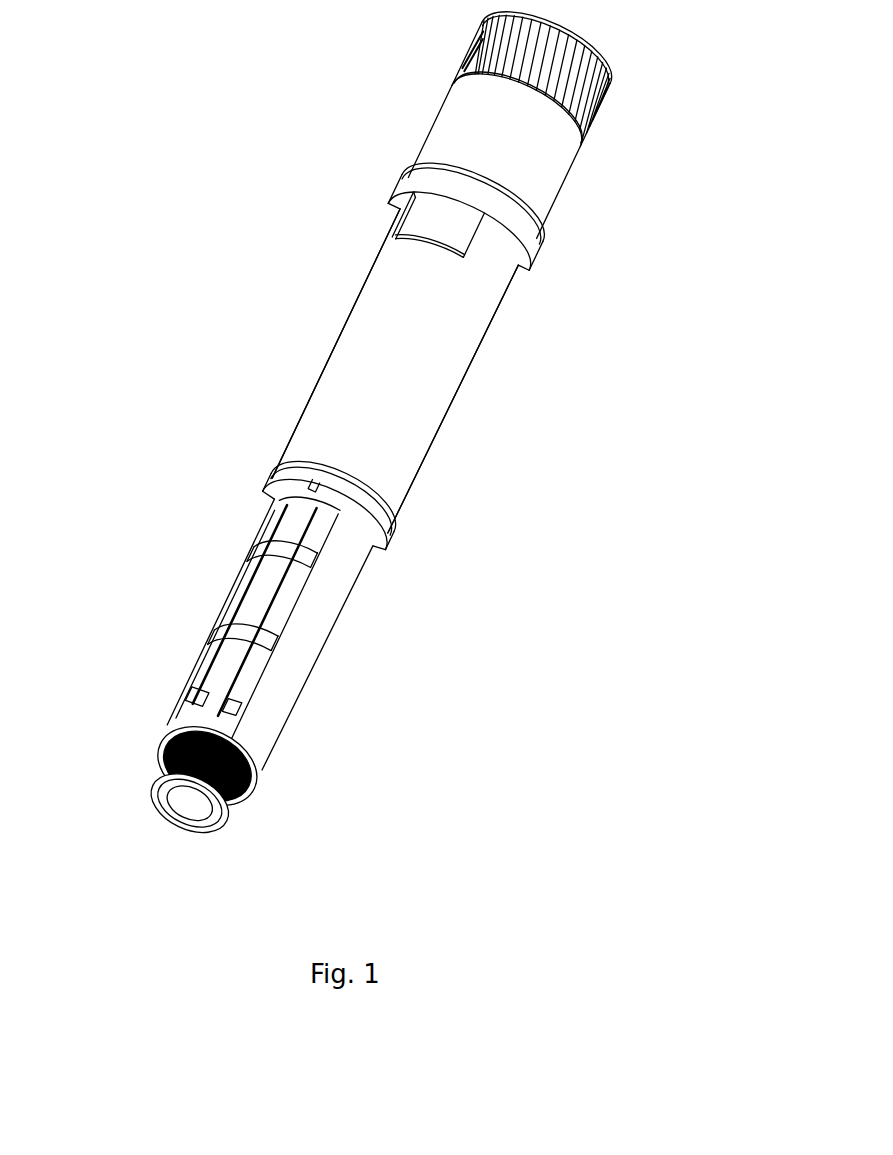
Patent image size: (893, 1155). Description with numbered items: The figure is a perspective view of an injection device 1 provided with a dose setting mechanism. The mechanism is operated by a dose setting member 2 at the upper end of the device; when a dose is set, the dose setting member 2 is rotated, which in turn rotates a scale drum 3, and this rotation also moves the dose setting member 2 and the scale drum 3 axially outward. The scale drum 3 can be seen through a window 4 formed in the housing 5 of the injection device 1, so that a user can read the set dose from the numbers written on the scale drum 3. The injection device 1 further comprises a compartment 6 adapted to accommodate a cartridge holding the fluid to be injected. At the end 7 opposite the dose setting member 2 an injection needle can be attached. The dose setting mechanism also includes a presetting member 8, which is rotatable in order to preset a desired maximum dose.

The injection device 1 is at (513, 485).
The dose setting member 2 is at (600, 102).
The scale drum 3 is at (432, 218).
The window 4 is at (403, 182).
The housing 5 is at (328, 403).
The compartment 6 is at (258, 607).
The end 7 is at (222, 832).
The presetting member 8 is at (537, 157).